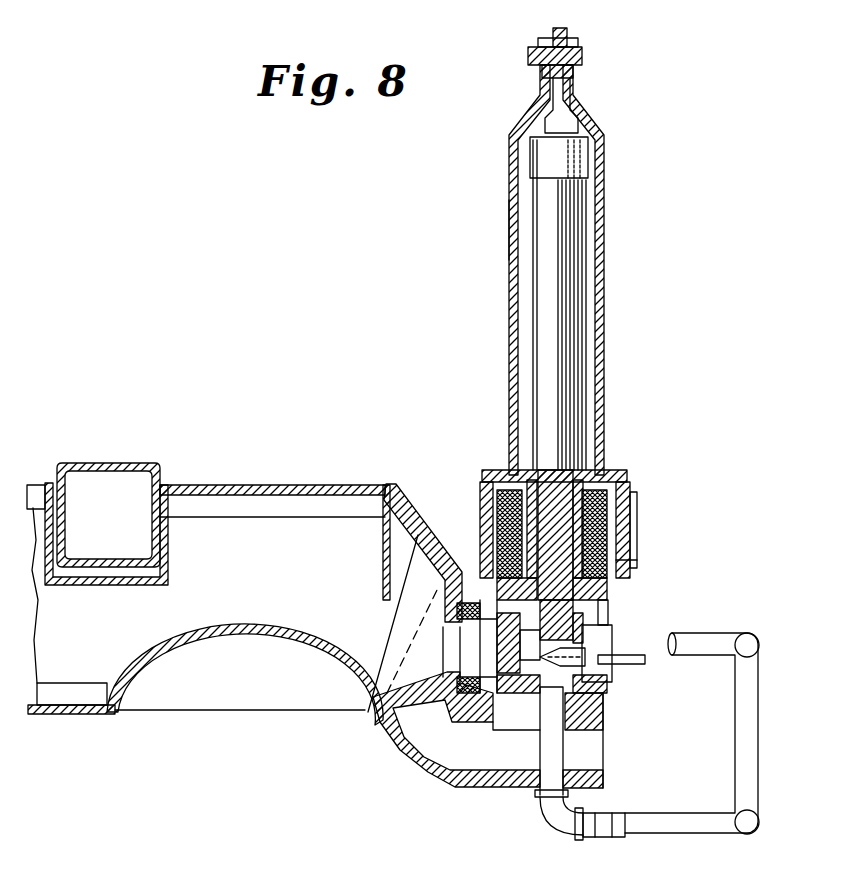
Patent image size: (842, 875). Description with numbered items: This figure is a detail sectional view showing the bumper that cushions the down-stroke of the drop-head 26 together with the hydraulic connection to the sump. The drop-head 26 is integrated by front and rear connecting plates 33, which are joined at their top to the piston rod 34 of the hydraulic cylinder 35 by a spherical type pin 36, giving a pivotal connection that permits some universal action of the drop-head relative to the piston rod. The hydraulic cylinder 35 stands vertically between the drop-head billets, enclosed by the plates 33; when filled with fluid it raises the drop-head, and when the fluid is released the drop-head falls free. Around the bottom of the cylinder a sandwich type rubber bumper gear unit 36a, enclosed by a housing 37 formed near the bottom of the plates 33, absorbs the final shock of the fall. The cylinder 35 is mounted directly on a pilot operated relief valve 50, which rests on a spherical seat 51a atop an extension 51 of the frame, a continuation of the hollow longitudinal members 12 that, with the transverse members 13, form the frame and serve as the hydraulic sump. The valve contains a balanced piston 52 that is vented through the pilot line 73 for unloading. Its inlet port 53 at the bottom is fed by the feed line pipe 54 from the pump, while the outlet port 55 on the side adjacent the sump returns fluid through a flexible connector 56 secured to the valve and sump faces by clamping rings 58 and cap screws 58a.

The hollow longitudinal members 12 is at (72, 714).
The transverse members 13 is at (120, 462).
The drop-head 26 is at (606, 300).
The connecting plates 33 is at (512, 188).
The piston rod 34 is at (582, 112).
The hydraulic cylinder 35 is at (550, 289).
The spherical type pin 36 is at (584, 53).
The sandwich type rubber bumper gear unit 36a is at (630, 520).
The housing 37 is at (480, 505).
The pilot operated relief valve 50 is at (600, 628).
The extension 51 is at (507, 760).
The spherical seat 51a is at (603, 727).
The balanced piston 52 is at (575, 668).
The inlet port 53 is at (590, 689).
The feed line pipe 54 is at (736, 742).
The outlet port 55 is at (510, 648).
The flexible connector 56 is at (468, 695).
The clamping rings 58 is at (478, 600).
The cap screws 58a is at (426, 622).
The pilot line 73 is at (636, 664).